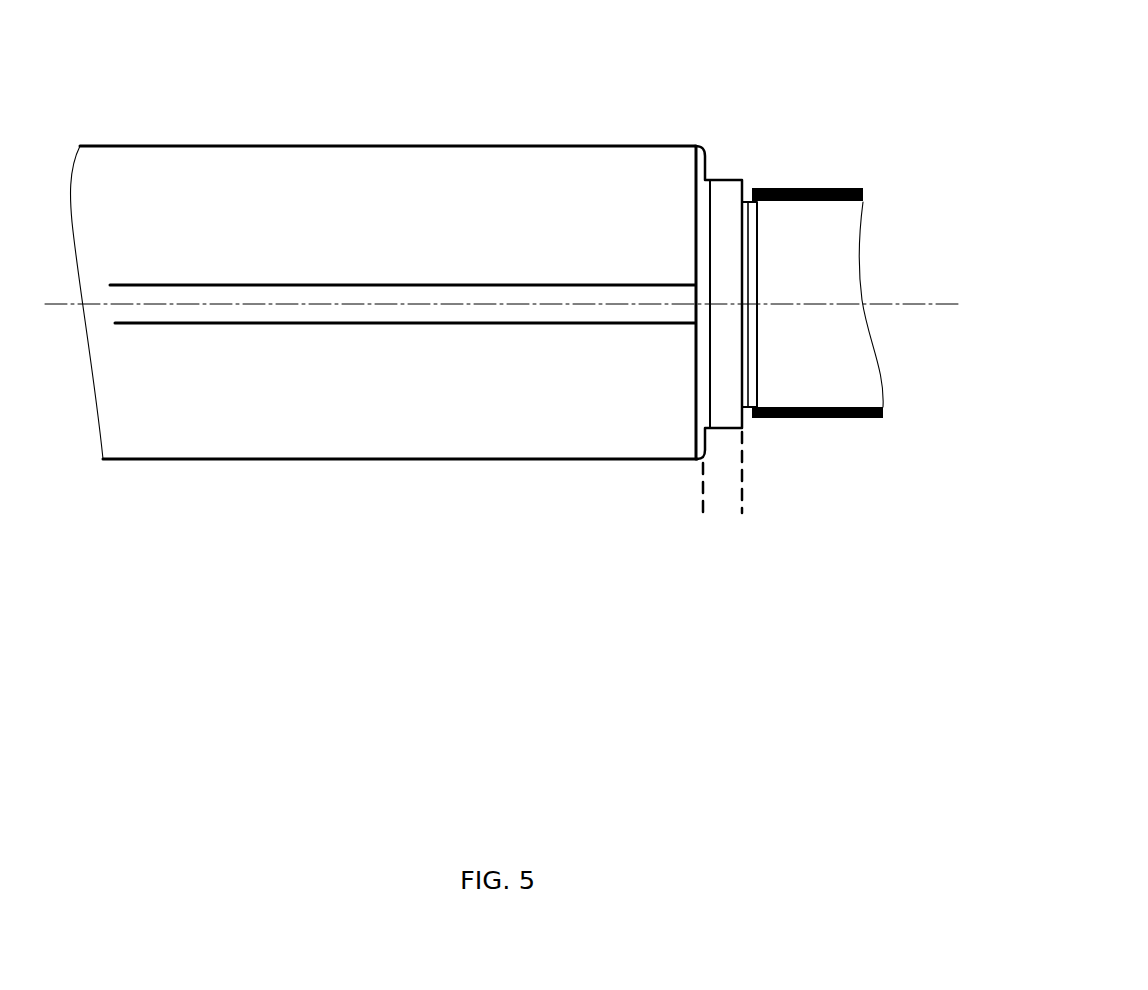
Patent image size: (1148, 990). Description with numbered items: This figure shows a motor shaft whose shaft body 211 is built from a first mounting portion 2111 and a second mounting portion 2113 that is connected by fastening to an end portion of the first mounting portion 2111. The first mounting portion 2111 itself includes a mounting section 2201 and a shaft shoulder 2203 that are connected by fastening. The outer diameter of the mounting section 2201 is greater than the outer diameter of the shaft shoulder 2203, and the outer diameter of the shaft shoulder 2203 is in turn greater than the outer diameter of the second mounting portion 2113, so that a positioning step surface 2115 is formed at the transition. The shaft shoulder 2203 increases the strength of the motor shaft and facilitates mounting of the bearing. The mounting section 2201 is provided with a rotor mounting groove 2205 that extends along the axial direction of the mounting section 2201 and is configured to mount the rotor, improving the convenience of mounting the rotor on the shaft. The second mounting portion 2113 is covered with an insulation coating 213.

The shaft body 211 is at (722, 391).
The first mounting portion 2111 is at (733, 620).
The second mounting portion 2113 is at (815, 378).
The positioning step surface 2115 is at (745, 200).
The insulation coating 213 is at (818, 190).
The mounting section 2201 is at (454, 405).
The shaft shoulder 2203 is at (742, 519).
The rotor mounting groove 2205 is at (222, 312).